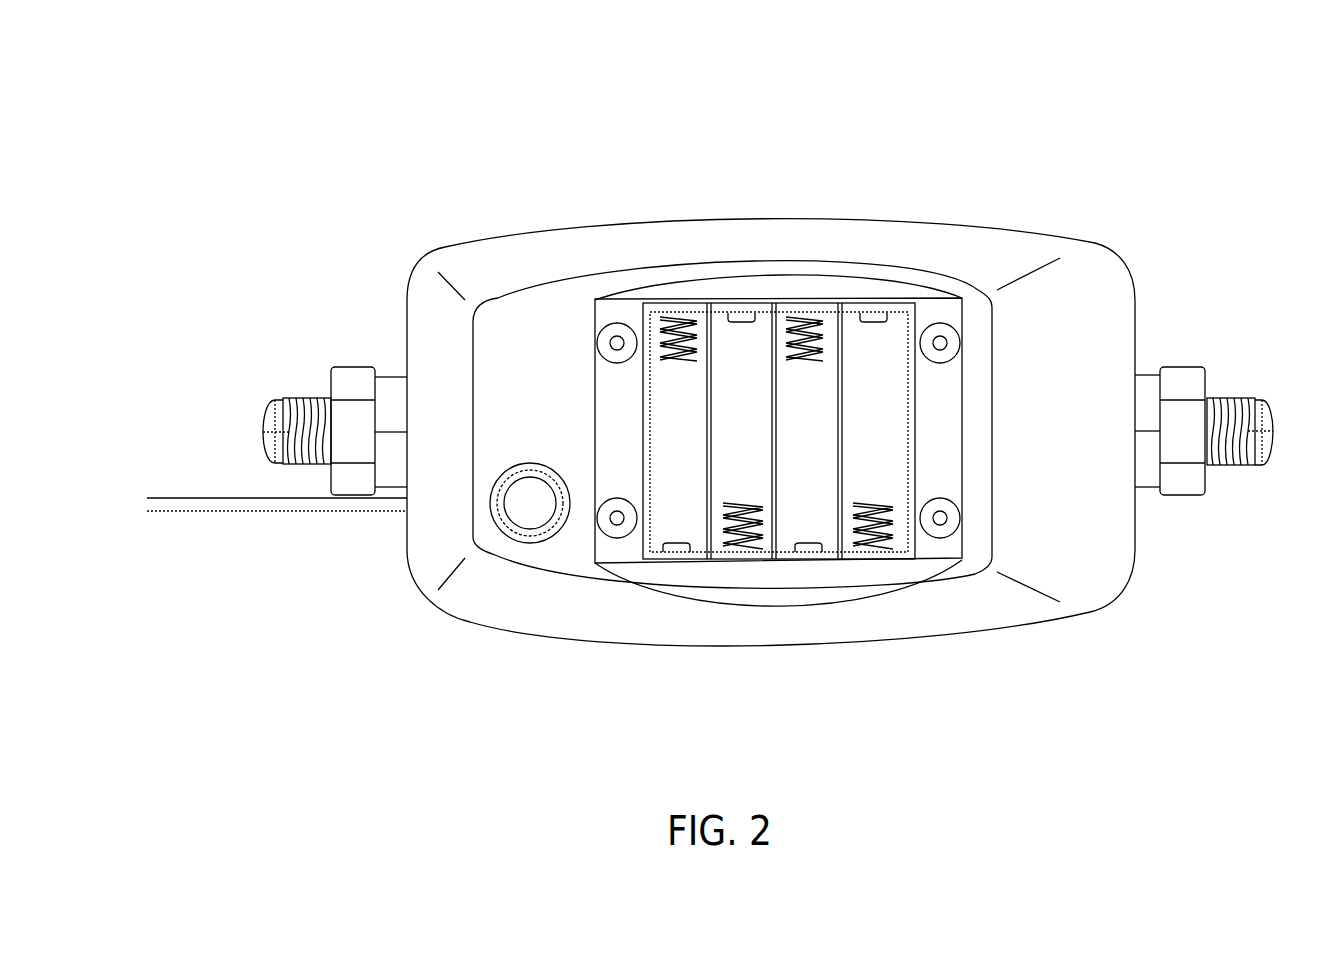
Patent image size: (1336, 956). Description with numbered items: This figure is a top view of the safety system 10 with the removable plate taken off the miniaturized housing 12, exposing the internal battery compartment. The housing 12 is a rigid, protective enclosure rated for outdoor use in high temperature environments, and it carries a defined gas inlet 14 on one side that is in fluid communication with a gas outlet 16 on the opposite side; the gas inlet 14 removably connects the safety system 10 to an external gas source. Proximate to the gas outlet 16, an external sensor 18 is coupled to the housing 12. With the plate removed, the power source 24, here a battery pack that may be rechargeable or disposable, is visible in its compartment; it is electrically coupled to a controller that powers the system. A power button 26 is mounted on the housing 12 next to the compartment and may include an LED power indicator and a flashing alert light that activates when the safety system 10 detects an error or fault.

The safety system 10 is at (733, 60).
The housing 12 is at (923, 642).
The gas inlet 14 is at (1243, 382).
The gas outlet 16 is at (297, 383).
The external sensor 18 is at (207, 512).
The power source 24 is at (793, 397).
The power button 26 is at (518, 530).